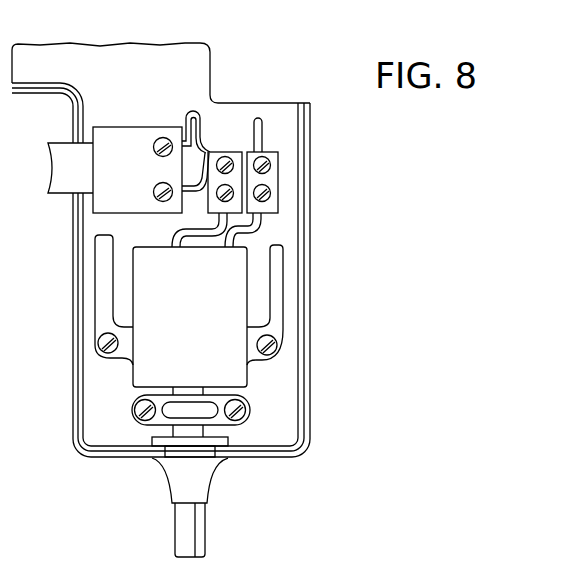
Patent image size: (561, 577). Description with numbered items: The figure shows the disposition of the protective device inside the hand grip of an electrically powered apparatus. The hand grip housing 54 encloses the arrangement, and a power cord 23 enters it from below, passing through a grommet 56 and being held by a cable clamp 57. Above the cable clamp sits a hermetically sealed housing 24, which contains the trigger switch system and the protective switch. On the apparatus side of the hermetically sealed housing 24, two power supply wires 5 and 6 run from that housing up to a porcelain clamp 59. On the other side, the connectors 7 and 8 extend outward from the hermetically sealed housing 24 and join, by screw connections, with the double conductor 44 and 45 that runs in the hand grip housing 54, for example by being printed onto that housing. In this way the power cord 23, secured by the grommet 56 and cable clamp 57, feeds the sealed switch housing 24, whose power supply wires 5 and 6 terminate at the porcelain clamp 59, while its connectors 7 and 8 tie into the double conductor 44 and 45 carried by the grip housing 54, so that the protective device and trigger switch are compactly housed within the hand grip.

The hand grip housing 54 is at (288, 127).
The porcelain clamp 59 is at (272, 177).
The power supply wire 5 is at (262, 224).
The power supply wire 6 is at (265, 237).
The hermetically sealed housing 24 is at (232, 272).
The double conductor 44 is at (100, 250).
The double conductor 45 is at (283, 290).
The connector 7 is at (264, 334).
The connector 8 is at (100, 358).
The cable clamp 57 is at (200, 412).
The grommet 56 is at (223, 441).
The power cord 23 is at (185, 533).